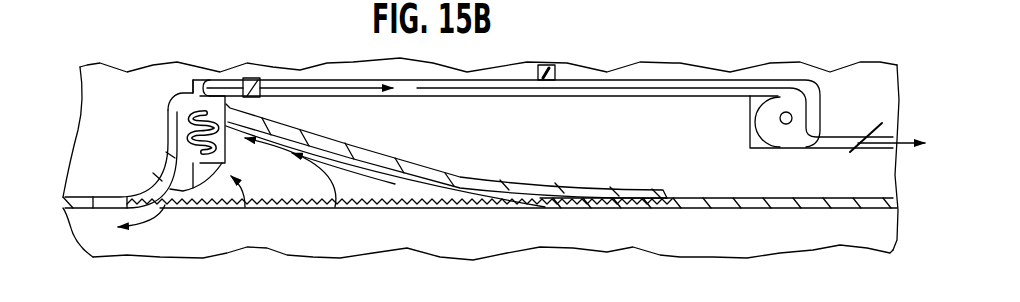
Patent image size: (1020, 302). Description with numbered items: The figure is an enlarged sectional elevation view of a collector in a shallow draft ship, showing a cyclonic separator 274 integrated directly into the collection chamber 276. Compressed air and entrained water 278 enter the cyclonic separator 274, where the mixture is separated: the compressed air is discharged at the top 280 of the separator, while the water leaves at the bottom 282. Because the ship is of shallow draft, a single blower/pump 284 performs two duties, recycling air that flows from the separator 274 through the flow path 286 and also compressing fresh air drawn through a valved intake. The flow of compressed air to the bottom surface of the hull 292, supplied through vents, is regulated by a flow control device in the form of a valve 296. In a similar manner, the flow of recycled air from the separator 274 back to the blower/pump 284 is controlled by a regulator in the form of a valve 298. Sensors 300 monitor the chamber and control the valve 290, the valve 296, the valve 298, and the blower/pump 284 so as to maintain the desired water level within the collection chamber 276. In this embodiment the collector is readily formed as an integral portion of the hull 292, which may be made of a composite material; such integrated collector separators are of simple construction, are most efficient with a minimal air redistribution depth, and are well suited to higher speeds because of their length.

The cyclonic separator 274 is at (245, 207).
The collection chamber 276 is at (271, 142).
The compressed air and entrained water 278 is at (340, 170).
The top 280 is at (205, 108).
The bottom 282 is at (160, 218).
The blower/pump 284 is at (787, 78).
The flow path 286 is at (467, 88).
The valve 290 is at (540, 80).
The hull 292 is at (713, 210).
The valve 296 is at (862, 128).
The valve 298 is at (258, 84).
The sensors 300 is at (103, 197).